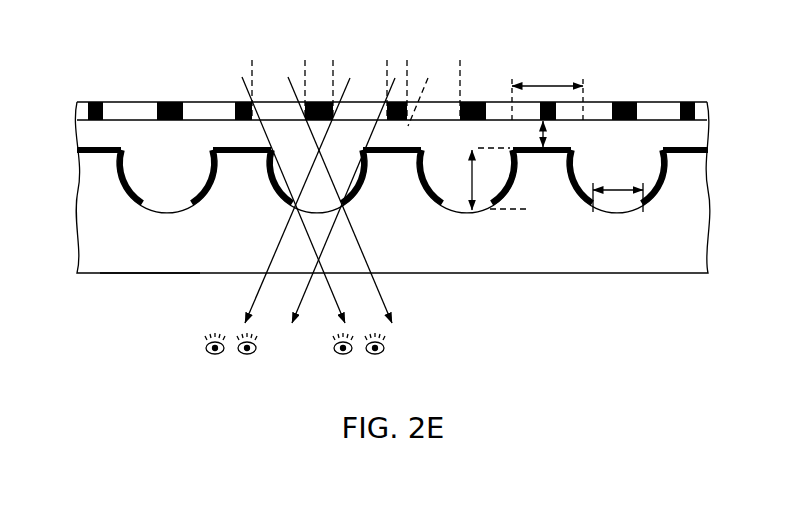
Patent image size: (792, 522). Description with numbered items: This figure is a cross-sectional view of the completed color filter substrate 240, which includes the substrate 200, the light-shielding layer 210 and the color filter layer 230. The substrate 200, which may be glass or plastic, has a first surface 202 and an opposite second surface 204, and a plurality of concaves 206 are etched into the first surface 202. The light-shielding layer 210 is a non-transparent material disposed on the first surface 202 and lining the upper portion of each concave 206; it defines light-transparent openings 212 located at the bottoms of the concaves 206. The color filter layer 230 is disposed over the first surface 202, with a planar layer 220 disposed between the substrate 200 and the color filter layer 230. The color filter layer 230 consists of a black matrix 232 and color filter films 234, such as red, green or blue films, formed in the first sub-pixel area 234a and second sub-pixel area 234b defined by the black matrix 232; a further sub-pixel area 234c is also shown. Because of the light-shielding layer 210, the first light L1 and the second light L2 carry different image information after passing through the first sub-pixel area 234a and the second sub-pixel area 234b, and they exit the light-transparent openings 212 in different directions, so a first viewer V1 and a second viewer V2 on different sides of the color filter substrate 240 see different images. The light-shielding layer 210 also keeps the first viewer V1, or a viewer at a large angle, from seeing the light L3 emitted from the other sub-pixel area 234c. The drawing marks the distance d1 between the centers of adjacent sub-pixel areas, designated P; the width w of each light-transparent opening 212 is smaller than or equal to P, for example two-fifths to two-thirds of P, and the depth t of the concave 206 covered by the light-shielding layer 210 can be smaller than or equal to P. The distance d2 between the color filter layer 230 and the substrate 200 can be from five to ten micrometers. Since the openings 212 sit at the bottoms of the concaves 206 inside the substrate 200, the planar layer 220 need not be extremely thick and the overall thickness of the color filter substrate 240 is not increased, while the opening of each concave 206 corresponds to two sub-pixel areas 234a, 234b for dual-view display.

The substrate 200 is at (692, 225).
The first surface 202 is at (102, 140).
The second surface 204 is at (148, 276).
The concaves 206 is at (173, 166).
The light-shielding layer 210 is at (713, 148).
The light-transparent openings 212 is at (615, 215).
The planar layer 220 is at (698, 133).
The color filter layer 230 is at (406, 67).
The black matrix 232 is at (690, 102).
The color filter films 234 is at (661, 81).
The first sub-pixel area 234a is at (333, 58).
The second sub-pixel area 234b is at (252, 58).
The sub-pixel area 234c is at (460, 58).
The color filter substrate 240 is at (737, 313).
The distance between centers of adjacent sub-pixel areas d1 is at (547, 92).
The distance between color filter layer and substrate d2 is at (557, 134).
The depth of concave covered by light-shielding layer t is at (494, 179).
The width of light-transparent opening w is at (618, 189).
The first light L1 is at (300, 303).
The second light L2 is at (383, 300).
The light L3 is at (407, 129).
The first viewer V1 is at (231, 356).
The second viewer V2 is at (359, 356).